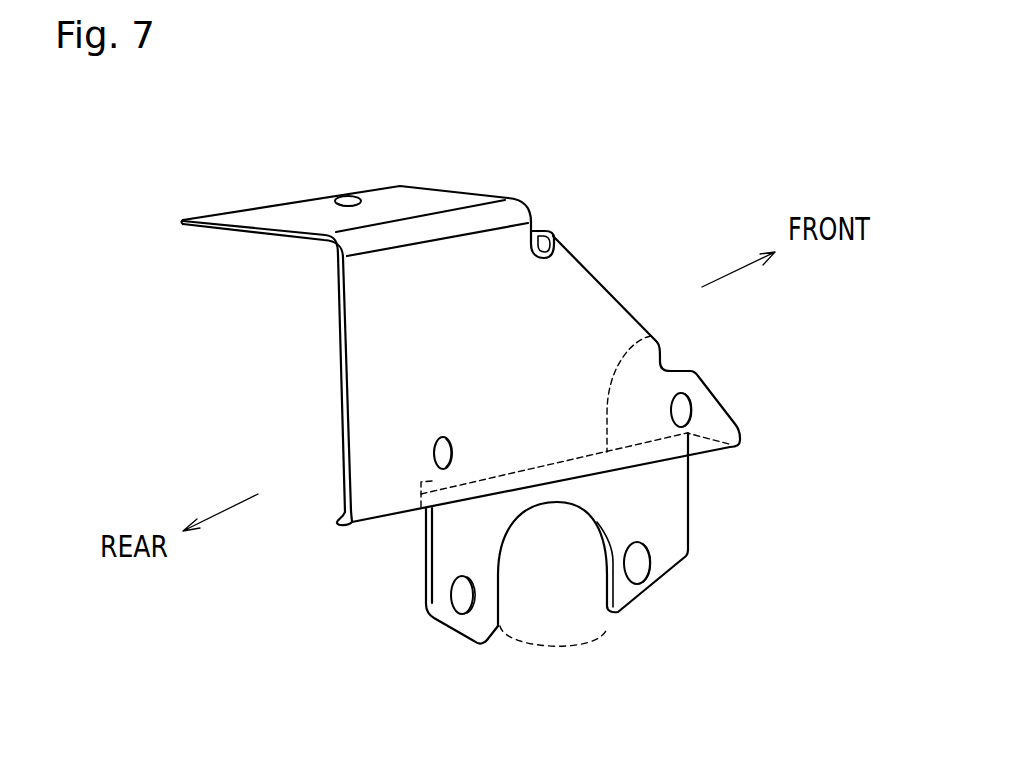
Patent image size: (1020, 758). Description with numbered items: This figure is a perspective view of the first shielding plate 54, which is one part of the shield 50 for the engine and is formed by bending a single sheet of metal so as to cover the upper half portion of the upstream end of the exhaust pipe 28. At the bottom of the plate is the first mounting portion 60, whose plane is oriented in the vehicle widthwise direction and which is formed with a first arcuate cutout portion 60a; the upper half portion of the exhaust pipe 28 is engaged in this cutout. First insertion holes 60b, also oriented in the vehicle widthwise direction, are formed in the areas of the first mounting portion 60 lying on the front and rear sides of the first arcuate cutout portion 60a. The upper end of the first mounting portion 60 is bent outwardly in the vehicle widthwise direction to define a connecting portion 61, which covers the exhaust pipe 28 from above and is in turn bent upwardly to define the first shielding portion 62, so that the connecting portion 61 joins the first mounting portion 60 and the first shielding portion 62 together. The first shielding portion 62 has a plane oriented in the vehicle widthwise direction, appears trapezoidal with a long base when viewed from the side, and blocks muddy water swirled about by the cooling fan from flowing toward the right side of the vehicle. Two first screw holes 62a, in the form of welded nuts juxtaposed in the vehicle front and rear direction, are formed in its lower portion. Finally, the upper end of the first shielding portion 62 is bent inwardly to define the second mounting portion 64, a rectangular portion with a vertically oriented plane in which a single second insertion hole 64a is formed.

The exhaust pipe 28 is at (567, 652).
The shield 50 is at (483, 383).
The first shielding plate 54 is at (570, 170).
The first mounting portion 60 is at (668, 498).
The first arcuate cutout portion 60a is at (546, 510).
The first insertion holes 60b is at (462, 594).
The connecting portion 61 is at (652, 338).
The first shielding portion 62 is at (563, 303).
The first screw hole 62a is at (683, 410).
The second mounting portion 64 is at (296, 217).
The second insertion hole 64a is at (348, 202).